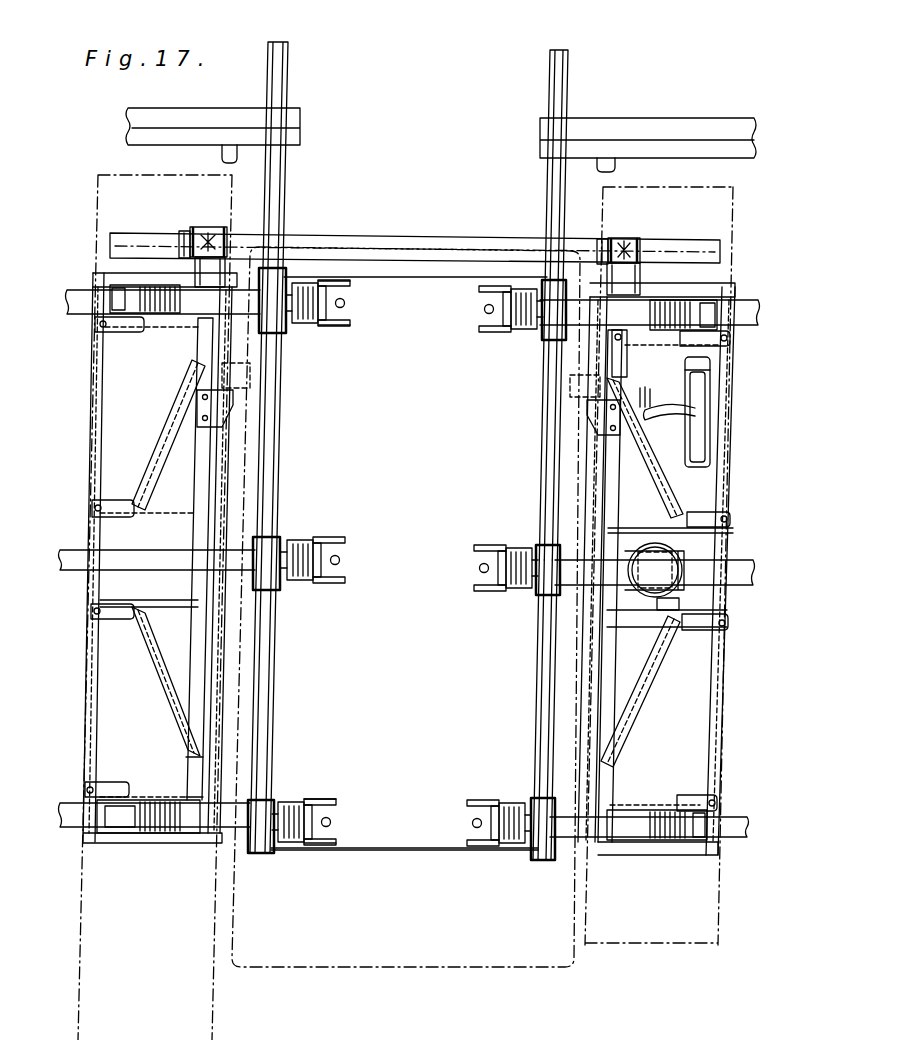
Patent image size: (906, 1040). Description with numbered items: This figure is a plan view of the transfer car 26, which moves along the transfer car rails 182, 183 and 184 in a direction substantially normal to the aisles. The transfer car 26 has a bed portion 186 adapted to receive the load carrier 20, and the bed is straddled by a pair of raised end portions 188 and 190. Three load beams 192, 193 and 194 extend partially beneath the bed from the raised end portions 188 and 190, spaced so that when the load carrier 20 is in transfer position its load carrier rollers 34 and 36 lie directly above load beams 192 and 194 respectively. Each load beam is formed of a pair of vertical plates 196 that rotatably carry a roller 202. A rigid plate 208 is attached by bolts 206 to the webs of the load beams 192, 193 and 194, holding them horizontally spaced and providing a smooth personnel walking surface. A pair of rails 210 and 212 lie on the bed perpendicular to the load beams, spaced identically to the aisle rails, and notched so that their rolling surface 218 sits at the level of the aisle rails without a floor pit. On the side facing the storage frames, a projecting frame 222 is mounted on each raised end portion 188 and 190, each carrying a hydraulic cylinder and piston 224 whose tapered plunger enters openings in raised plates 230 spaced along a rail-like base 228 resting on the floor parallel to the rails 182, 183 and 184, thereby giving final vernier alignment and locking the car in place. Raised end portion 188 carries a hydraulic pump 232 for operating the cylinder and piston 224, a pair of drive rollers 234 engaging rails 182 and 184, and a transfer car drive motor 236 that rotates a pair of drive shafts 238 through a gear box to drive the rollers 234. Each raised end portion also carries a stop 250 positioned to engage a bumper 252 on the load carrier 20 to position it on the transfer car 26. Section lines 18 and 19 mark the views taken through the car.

The section line 18- 18 is at (118, 212).
The section line 19- 19 is at (622, 197).
The load carrier 20 is at (362, 971).
The transfer car 26 is at (197, 847).
The load carrier roller 34 is at (284, 331).
The load carrier roller 36 is at (270, 790).
The transfer car rail 182 is at (733, 837).
The transfer car rail 183 is at (742, 575).
The transfer car rail 184 is at (750, 321).
The bed portion 186 is at (405, 853).
The raised end portion 188 is at (663, 862).
The raised end portion 190 is at (140, 846).
The load beam 192 is at (223, 812).
The load beam 193 is at (247, 553).
The load beam 194 is at (228, 301).
The vertical plate 196 is at (320, 800).
The roller 202 is at (310, 326).
The bolt 206 is at (343, 568).
The rigid plate 208 is at (433, 719).
The rail 210 is at (272, 462).
The rail 212 is at (550, 462).
The rolling surface 218 is at (263, 680).
The projecting frame 222 is at (196, 266).
The hydraulic cylinder and piston 224 is at (208, 228).
The rail-like base 228 is at (441, 240).
The raised plate 230 is at (186, 231).
The hydraulic pump 232 is at (693, 380).
The drive roller 234 is at (663, 314).
The transfer car drive motor 236 is at (653, 580).
The drive shaft 238 is at (670, 460).
The stop 250 is at (234, 410).
The bumper 252 is at (252, 374).